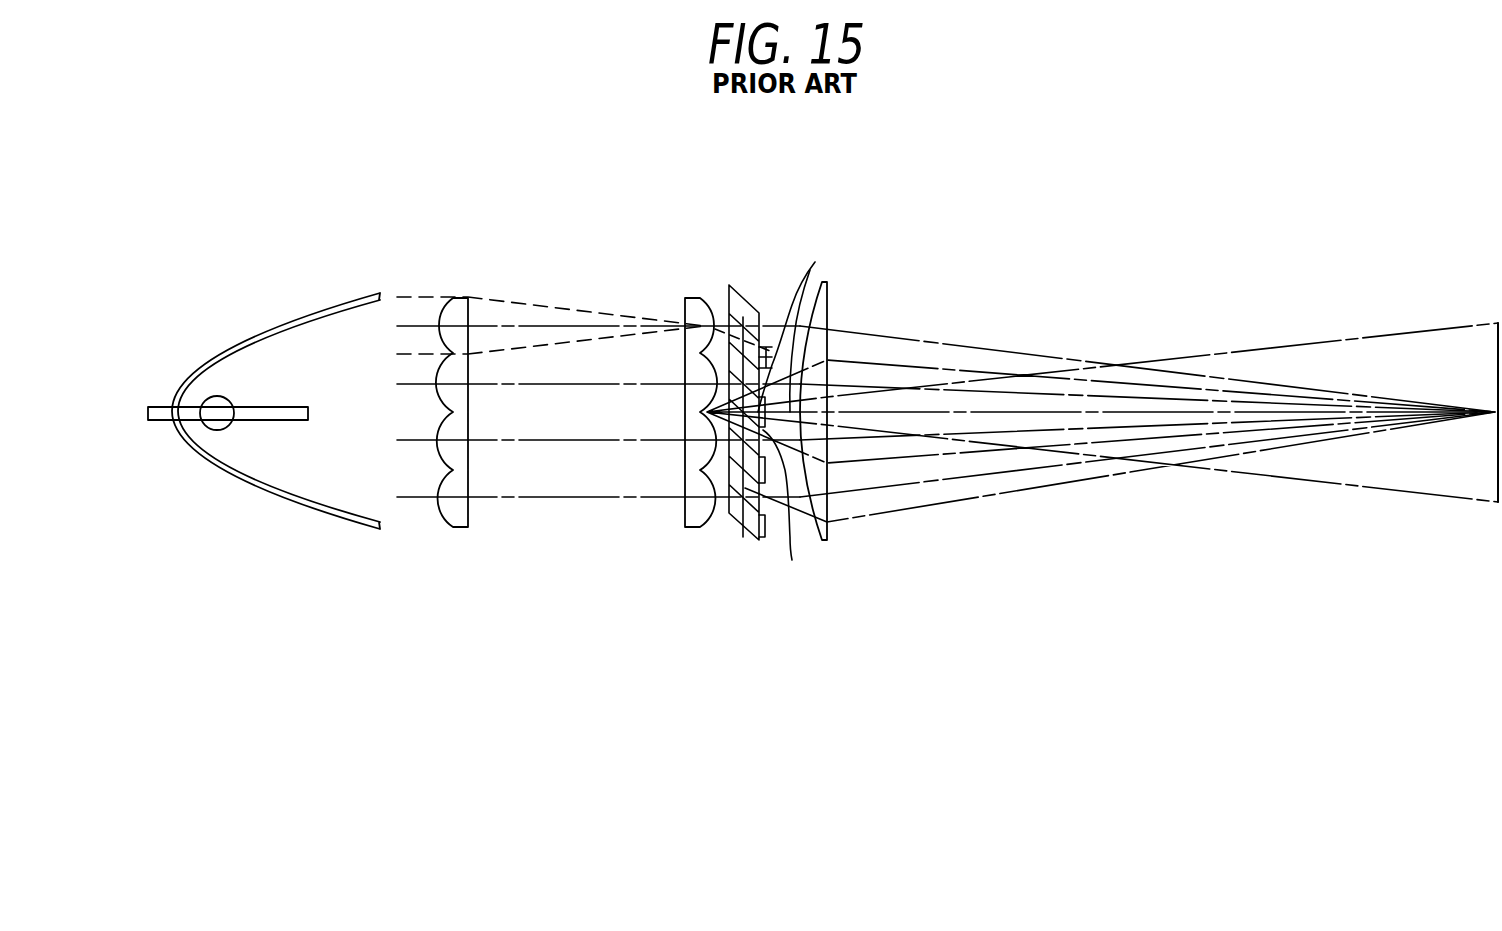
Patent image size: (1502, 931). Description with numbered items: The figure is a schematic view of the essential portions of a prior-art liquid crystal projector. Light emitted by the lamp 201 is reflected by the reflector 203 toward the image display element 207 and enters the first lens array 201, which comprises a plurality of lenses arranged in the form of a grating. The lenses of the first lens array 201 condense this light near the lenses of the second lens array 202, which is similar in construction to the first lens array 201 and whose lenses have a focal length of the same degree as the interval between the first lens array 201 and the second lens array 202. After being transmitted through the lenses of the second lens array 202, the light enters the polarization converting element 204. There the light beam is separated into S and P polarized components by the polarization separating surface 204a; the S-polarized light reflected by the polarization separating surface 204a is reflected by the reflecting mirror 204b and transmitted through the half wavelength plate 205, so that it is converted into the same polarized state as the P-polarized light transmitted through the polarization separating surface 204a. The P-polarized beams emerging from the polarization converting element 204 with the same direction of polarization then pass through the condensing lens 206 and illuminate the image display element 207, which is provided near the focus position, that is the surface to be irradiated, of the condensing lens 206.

The lamp / first lens array 201 is at (463, 300).
The second lens array 202 is at (692, 297).
The reflector 203 is at (334, 292).
The polarization converting element 204 is at (768, 284).
The polarization separating surface 204a is at (735, 300).
The reflecting mirror 204b is at (737, 513).
The half wavelength plate 205 is at (632, 551).
The condensing lens 206 is at (828, 306).
The image display element 207 is at (1498, 483).